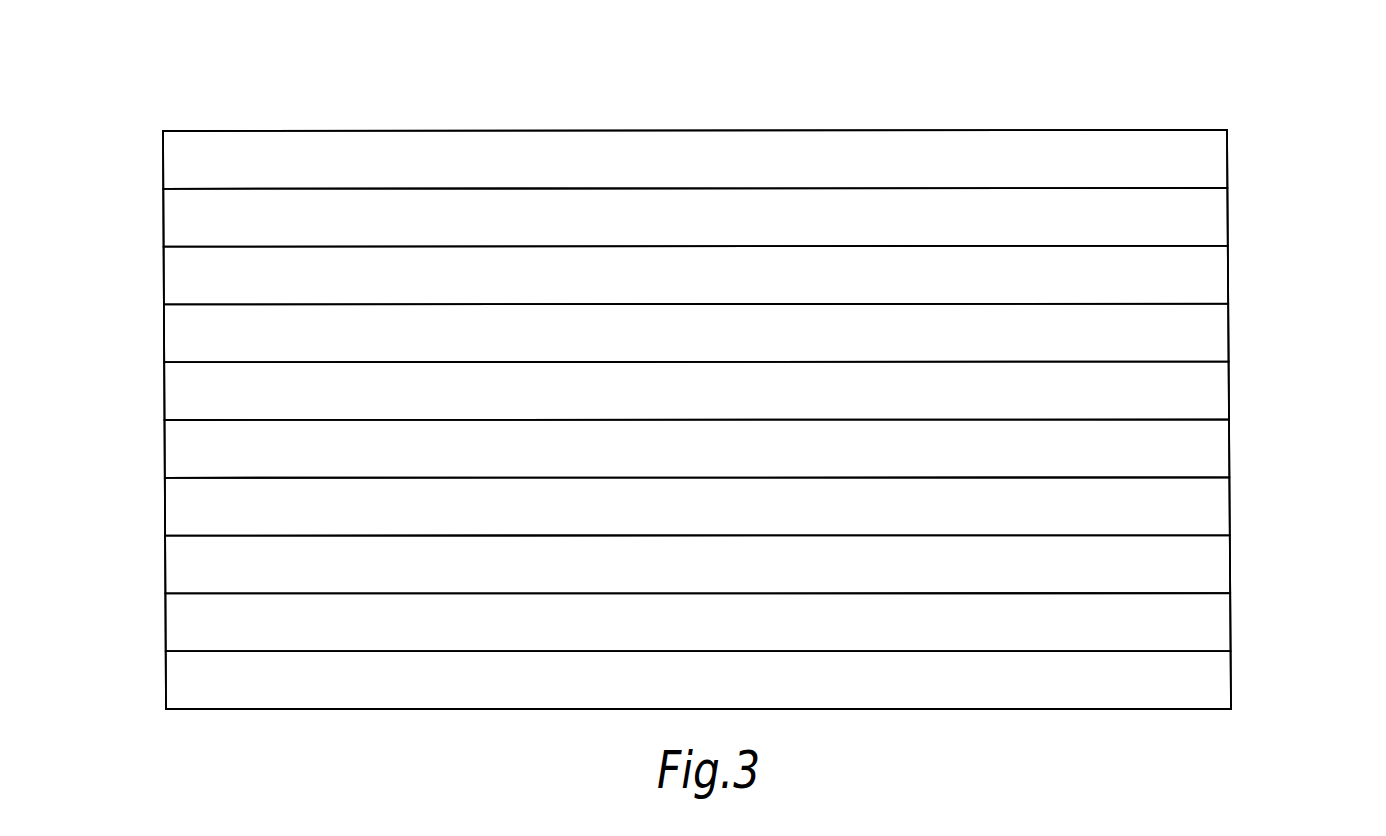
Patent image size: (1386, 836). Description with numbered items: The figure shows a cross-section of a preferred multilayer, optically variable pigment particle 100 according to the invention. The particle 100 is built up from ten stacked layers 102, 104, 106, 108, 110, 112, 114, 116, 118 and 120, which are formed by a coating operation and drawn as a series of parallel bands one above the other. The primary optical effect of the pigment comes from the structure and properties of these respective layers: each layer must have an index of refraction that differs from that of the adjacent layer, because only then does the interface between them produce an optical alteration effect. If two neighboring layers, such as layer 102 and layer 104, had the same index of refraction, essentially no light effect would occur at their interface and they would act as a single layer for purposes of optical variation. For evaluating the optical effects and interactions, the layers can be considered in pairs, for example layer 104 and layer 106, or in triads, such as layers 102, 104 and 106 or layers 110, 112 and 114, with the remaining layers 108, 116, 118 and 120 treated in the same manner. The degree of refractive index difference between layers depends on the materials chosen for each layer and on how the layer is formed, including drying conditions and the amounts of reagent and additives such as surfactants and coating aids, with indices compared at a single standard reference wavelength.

The pigment particle 100 is at (1260, 48).
The layer 102 is at (166, 683).
The layer 104 is at (166, 625).
The layer 106 is at (165, 568).
The layer 108 is at (165, 510).
The layer 110 is at (165, 452).
The layer 112 is at (164, 394).
The layer 114 is at (164, 336).
The layer 116 is at (164, 279).
The layer 118 is at (163, 221).
The layer 120 is at (163, 163).